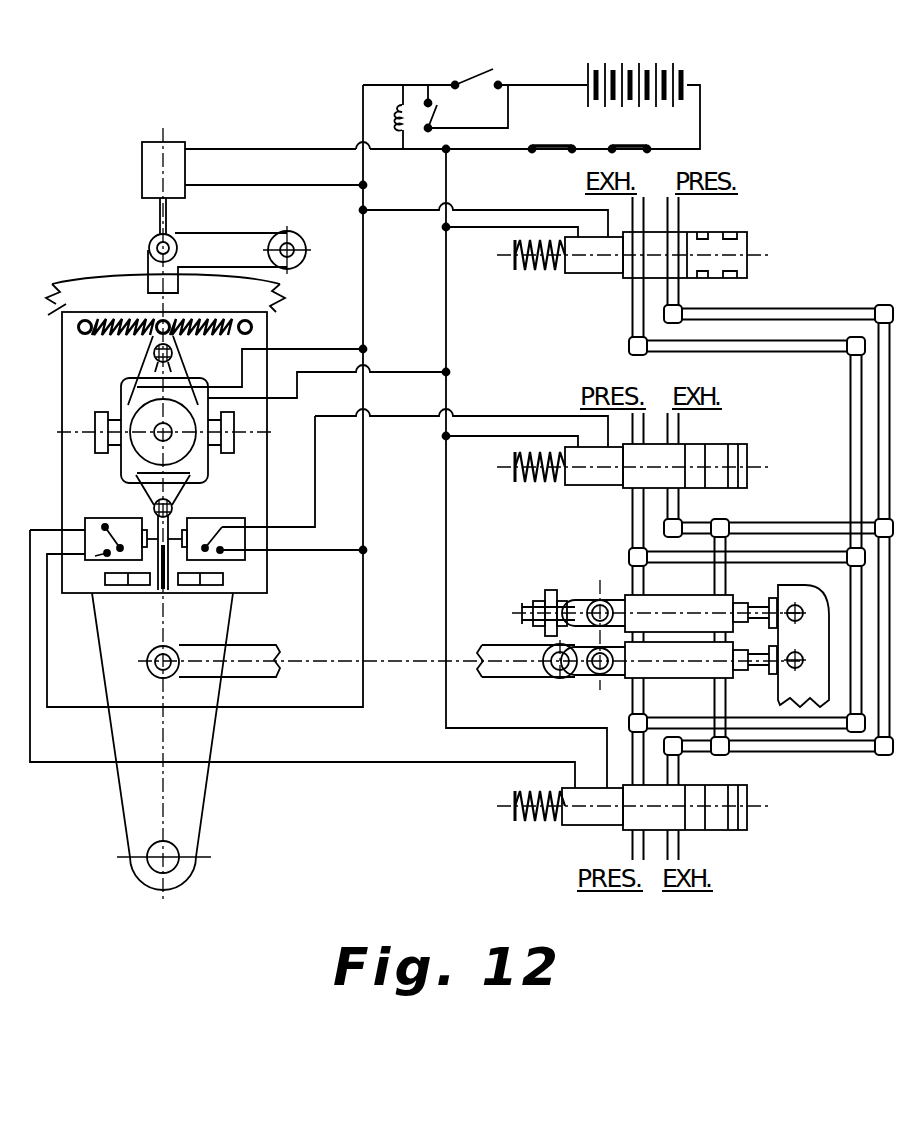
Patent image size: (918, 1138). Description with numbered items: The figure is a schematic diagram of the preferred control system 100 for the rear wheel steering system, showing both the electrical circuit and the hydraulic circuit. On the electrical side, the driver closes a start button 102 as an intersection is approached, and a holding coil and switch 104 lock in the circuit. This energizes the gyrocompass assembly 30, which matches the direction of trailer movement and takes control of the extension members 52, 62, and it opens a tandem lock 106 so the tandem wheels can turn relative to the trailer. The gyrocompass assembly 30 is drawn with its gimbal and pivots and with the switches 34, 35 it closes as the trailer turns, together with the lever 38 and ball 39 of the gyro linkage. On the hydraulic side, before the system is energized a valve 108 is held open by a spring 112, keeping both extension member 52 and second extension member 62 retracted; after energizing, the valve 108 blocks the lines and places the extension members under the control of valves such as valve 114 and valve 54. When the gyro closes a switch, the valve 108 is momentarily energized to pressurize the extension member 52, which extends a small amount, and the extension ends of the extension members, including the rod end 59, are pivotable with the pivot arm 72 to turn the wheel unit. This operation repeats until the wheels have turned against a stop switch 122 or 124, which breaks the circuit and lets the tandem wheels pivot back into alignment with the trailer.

The control system 100 is at (778, 113).
The start button 102 is at (480, 70).
The holding coil and switch 104 is at (411, 77).
The tandem lock 106 is at (152, 240).
The valve 108 is at (718, 282).
The spring 112 is at (515, 274).
The valve 114 is at (723, 442).
The switch 122 is at (546, 152).
The switch 124 is at (614, 145).
The gyrocompass assembly 30 is at (121, 384).
The switch 34 is at (112, 518).
The switch 35 is at (226, 518).
The lever 38 is at (162, 596).
The ball pivot 39 is at (178, 350).
The extension member 52 is at (238, 678).
The unit end 54 is at (579, 827).
The rod end 59 is at (760, 675).
The second extension member 62 is at (633, 582).
The pivot arm 72 is at (814, 685).